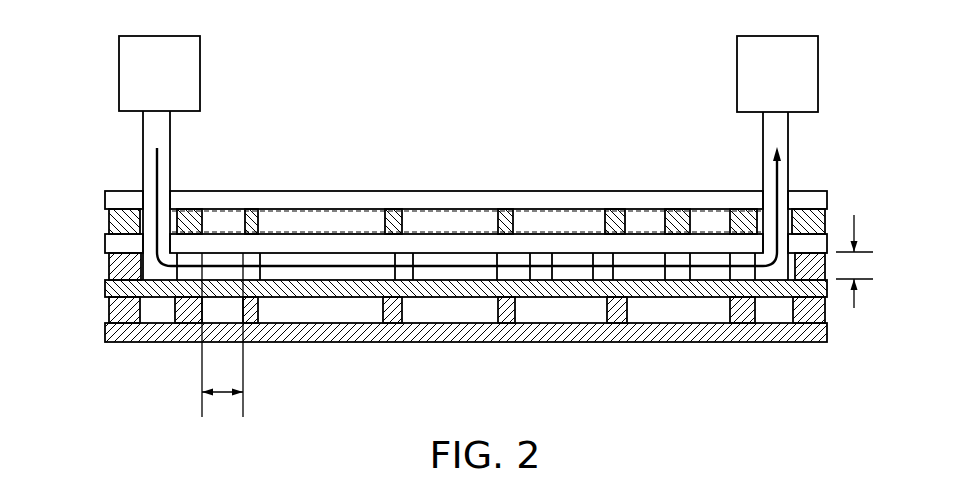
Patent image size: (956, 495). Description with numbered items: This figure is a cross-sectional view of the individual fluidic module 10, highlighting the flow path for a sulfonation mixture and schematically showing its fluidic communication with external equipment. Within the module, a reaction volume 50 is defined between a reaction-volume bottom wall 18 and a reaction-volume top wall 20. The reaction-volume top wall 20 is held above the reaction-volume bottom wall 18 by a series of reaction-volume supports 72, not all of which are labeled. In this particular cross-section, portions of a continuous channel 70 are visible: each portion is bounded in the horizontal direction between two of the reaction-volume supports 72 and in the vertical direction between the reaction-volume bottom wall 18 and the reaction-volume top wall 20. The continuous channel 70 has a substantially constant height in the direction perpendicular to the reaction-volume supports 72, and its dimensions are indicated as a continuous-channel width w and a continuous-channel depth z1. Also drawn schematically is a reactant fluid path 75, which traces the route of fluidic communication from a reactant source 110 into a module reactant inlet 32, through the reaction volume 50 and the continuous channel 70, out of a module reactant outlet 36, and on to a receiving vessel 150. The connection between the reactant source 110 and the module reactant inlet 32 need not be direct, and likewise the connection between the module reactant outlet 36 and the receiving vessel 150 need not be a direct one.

The individual fluidic module 10 is at (486, 241).
The reaction-volume bottom wall 18 is at (112, 290).
The reaction-volume top wall 20 is at (115, 245).
The module reactant inlet 32 is at (143, 181).
The module reactant outlet 36 is at (790, 180).
The reaction volume 50 is at (115, 268).
The continuous channel 70 is at (222, 273).
The reaction-volume supports 72 is at (405, 273).
The reactant fluid path 75 is at (159, 166).
The reactant source 110 is at (147, 87).
The receiving vessel 150 is at (763, 85).
The continuous-channel depth z1 is at (857, 268).
The continuous-channel width w is at (222, 396).